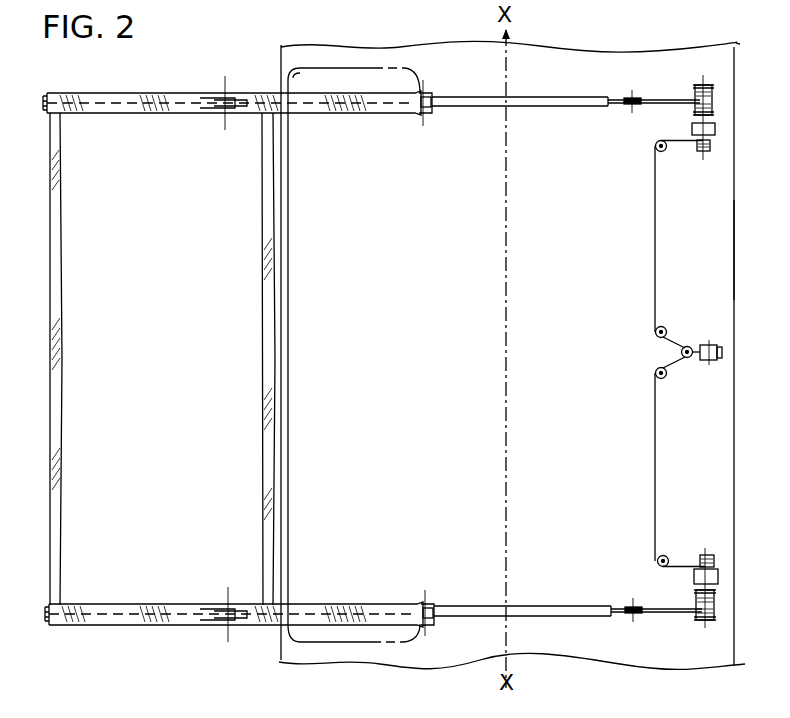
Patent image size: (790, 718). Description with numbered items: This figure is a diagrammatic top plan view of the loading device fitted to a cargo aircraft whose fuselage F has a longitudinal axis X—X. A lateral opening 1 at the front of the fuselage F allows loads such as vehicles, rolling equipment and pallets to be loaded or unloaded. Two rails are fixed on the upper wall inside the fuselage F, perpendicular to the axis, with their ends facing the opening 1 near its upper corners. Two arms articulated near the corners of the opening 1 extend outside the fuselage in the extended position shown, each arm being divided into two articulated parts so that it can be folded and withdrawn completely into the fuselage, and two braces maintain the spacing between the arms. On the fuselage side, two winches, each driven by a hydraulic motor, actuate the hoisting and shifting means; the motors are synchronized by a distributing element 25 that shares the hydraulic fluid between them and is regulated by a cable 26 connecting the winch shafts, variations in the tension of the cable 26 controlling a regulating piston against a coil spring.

The lateral opening 1 is at (368, 362).
The distributing element 25 is at (714, 345).
The cable 26 is at (655, 275).
The fuselage F is at (737, 268).